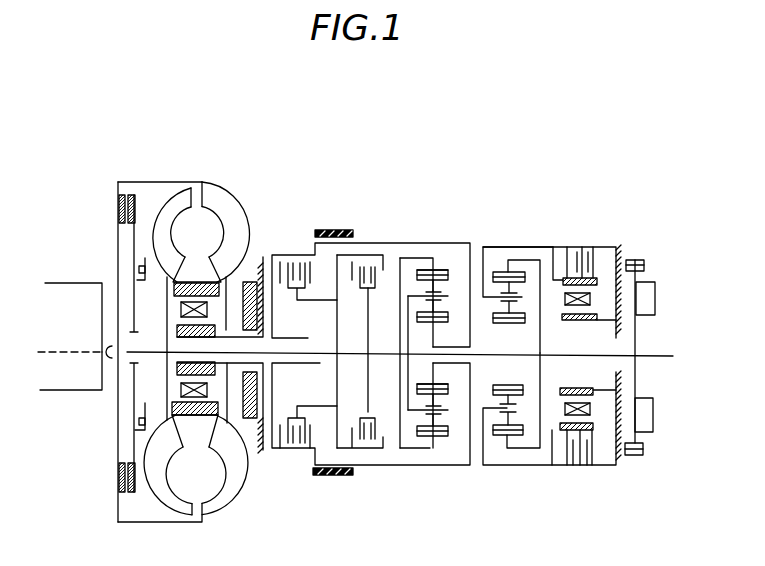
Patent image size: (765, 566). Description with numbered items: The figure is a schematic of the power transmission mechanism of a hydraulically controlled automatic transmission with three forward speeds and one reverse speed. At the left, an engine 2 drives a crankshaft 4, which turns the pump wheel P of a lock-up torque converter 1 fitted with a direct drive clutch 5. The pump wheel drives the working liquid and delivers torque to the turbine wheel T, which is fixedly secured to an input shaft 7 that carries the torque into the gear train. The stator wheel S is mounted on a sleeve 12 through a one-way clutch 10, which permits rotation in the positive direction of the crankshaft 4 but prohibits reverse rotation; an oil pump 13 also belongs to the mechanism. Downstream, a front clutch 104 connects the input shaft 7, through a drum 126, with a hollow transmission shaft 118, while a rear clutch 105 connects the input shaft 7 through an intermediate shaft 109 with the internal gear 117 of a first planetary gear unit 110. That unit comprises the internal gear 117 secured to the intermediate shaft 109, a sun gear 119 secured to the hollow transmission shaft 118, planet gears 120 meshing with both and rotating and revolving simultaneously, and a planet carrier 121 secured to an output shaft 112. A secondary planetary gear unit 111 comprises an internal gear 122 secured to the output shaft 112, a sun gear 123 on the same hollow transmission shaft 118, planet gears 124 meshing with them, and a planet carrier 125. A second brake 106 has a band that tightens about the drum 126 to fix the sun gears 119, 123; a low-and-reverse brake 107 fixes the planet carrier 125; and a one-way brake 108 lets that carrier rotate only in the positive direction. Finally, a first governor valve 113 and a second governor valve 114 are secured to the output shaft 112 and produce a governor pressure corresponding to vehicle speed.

The torque converter 1 is at (219, 185).
The engine 2 is at (63, 282).
The crankshaft 4 is at (63, 340).
The direct drive clutch 5 is at (123, 181).
The input shaft 7 is at (152, 372).
The one-way clutch 10 is at (177, 305).
The sleeve 12 is at (227, 410).
The oil pump 13 is at (250, 320).
The front clutch 104 is at (297, 255).
The rear clutch 105 is at (376, 255).
The second brake 106 is at (331, 230).
The low-and-reverse brake 107 is at (580, 247).
The one-way brake 108 is at (590, 293).
The intermediate shaft 109 is at (376, 355).
The first planetary gear unit 110 is at (448, 262).
The secondary planetary gear unit 111 is at (528, 246).
The output shaft 112 is at (653, 355).
The first governor valve 113 is at (655, 412).
The second governor valve 114 is at (655, 298).
The internal gear 117 is at (416, 257).
The hollow transmission shaft 118 is at (474, 365).
The sun gear 119 is at (450, 380).
The planet gears 120 is at (410, 460).
The planet carrier 121 is at (405, 372).
The internal gear 122 is at (521, 270).
The sun gear 123 is at (562, 467).
The planet gears 124 is at (520, 394).
The planet carrier 125 is at (513, 222).
The drum 126 is at (369, 255).